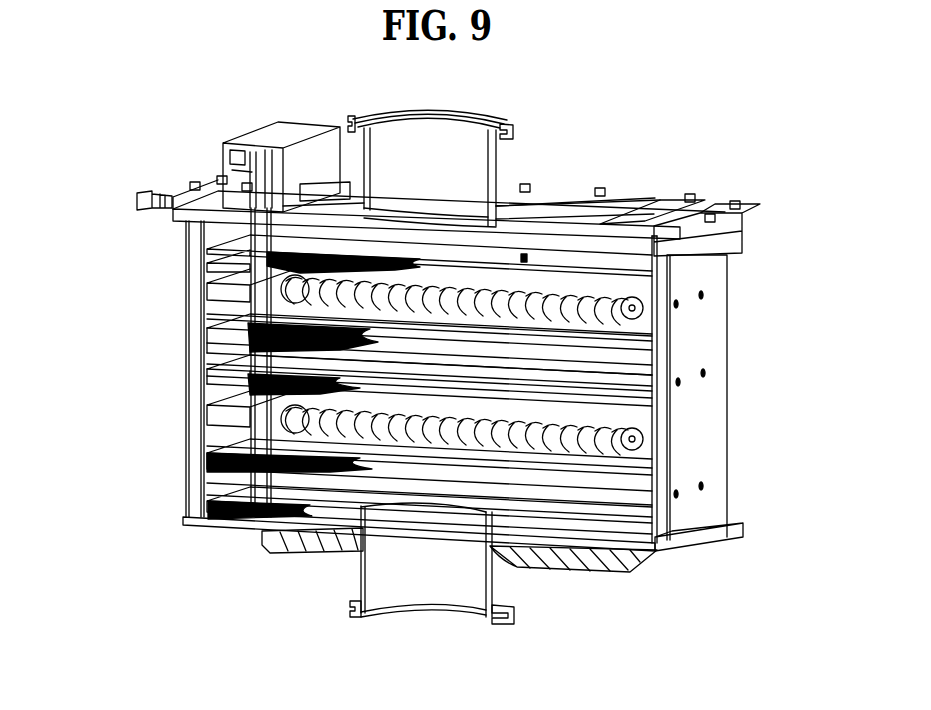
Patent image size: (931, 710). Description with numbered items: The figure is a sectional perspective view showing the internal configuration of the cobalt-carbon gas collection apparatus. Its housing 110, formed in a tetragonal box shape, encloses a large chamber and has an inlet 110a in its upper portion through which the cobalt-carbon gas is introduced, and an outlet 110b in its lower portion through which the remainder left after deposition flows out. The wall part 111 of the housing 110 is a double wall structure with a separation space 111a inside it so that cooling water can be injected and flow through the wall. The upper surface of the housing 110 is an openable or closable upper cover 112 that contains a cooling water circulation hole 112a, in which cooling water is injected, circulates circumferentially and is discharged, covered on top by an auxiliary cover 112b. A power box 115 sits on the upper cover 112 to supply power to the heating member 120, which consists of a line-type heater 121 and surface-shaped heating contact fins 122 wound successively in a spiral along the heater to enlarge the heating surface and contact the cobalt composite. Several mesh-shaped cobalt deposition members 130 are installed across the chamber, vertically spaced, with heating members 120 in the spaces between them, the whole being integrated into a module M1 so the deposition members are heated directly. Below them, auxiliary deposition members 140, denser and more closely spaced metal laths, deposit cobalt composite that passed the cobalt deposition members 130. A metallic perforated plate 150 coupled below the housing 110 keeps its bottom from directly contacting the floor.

The housing 110 is at (718, 281).
The inlet 110a is at (430, 127).
The outlet 110b is at (430, 606).
The wall part 111 is at (665, 546).
The separation space 111a is at (665, 335).
The upper cover 112 is at (351, 185).
The cooling water circulation hole 112a is at (632, 227).
The auxiliary cover 112b is at (608, 191).
The power box 115 is at (287, 127).
The heating member 120 is at (183, 362).
The line-type heater 121 is at (257, 301).
The heating contact fins 122 is at (227, 286).
The cobalt deposition member 130 is at (585, 282).
The auxiliary deposition member 140 is at (627, 384).
The metallic perforated plate 150 is at (602, 570).
The module M1 is at (522, 251).